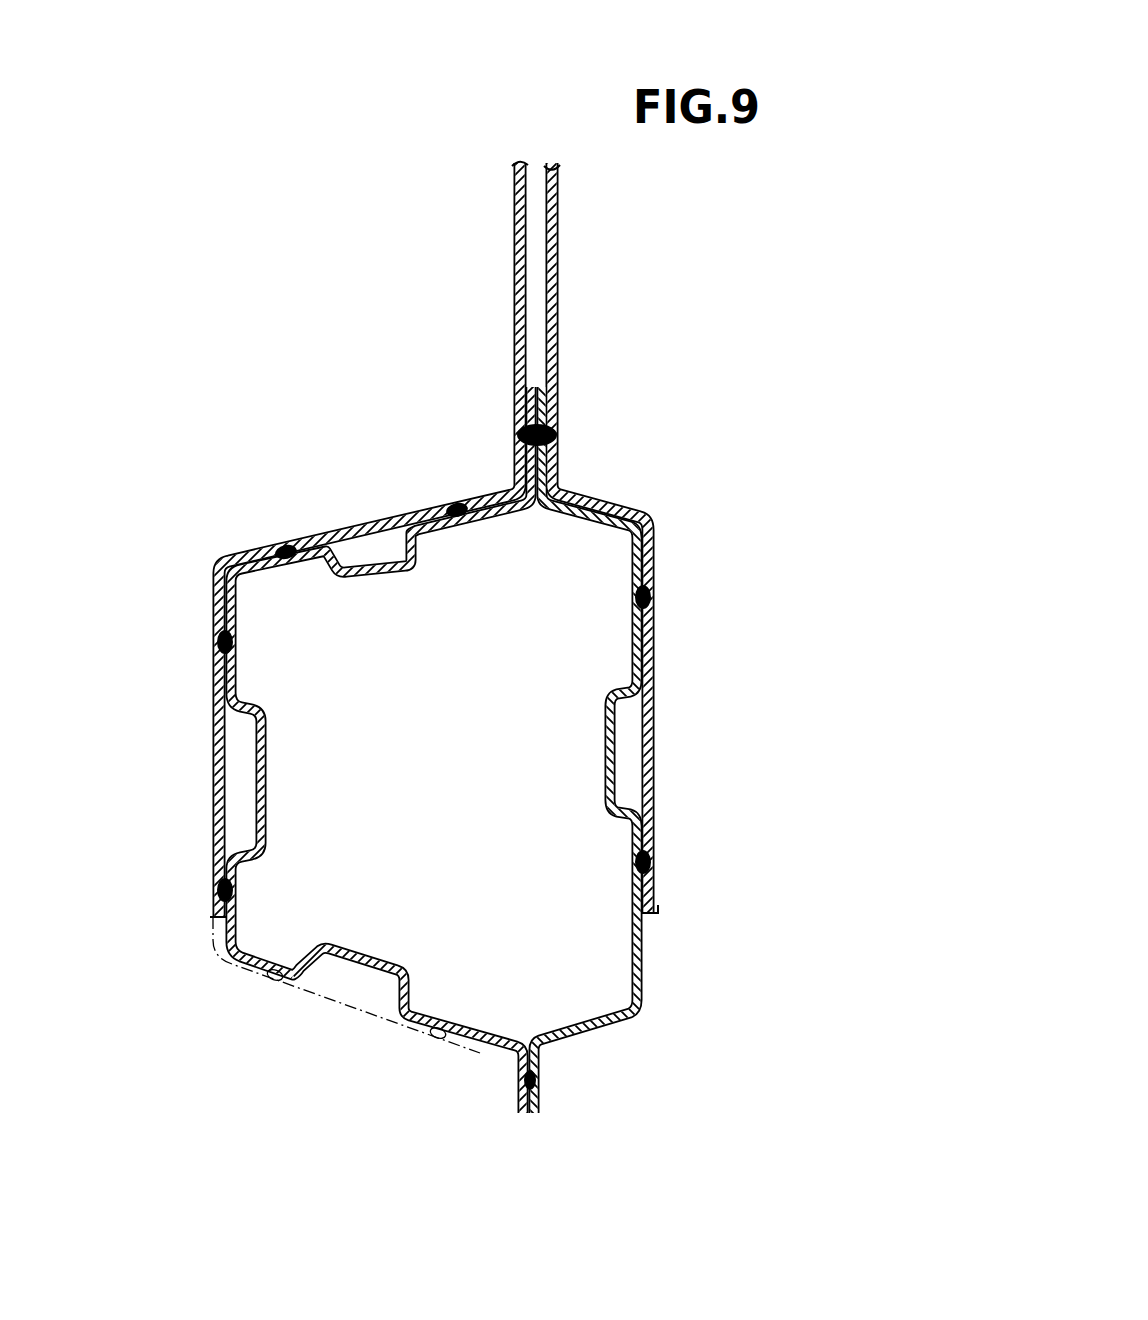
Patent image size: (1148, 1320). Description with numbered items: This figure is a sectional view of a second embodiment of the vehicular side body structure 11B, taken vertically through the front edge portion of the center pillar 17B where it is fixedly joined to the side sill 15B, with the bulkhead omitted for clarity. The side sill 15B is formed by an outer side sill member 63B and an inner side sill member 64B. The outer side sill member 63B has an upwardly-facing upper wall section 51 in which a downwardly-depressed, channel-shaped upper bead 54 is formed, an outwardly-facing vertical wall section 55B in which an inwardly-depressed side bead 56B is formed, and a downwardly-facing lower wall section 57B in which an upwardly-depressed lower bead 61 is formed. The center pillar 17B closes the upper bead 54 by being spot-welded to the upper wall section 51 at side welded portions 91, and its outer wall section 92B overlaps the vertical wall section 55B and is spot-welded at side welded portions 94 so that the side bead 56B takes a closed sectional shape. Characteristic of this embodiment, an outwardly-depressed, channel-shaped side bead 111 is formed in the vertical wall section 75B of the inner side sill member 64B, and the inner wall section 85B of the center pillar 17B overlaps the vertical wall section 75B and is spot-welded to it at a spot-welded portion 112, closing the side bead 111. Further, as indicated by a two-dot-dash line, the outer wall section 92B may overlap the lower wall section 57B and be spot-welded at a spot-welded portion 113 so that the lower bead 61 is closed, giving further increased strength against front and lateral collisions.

The vehicular side body structure 11B is at (277, 262).
The center pillar 17B is at (517, 150).
The side sill 15B is at (497, 1112).
The inner wall section 85B is at (560, 268).
The outer wall section 92B is at (514, 243).
The side welded portions 91 is at (455, 500).
The side welded portions 94 is at (216, 643).
The spot-welded portion 112 is at (652, 598).
The outer side sill member 63B is at (258, 623).
The inner side sill member 64B is at (606, 607).
The vertical wall section 55B is at (237, 665).
The side bead 56B is at (267, 762).
The upper bead 54 is at (380, 580).
The upper wall section 51 is at (480, 532).
The vertical wall section 75B is at (638, 648).
The side bead 111 is at (607, 745).
The lower bead 61 is at (380, 953).
The lower wall section 57B is at (297, 985).
The spot-welded portion 113 is at (268, 982).